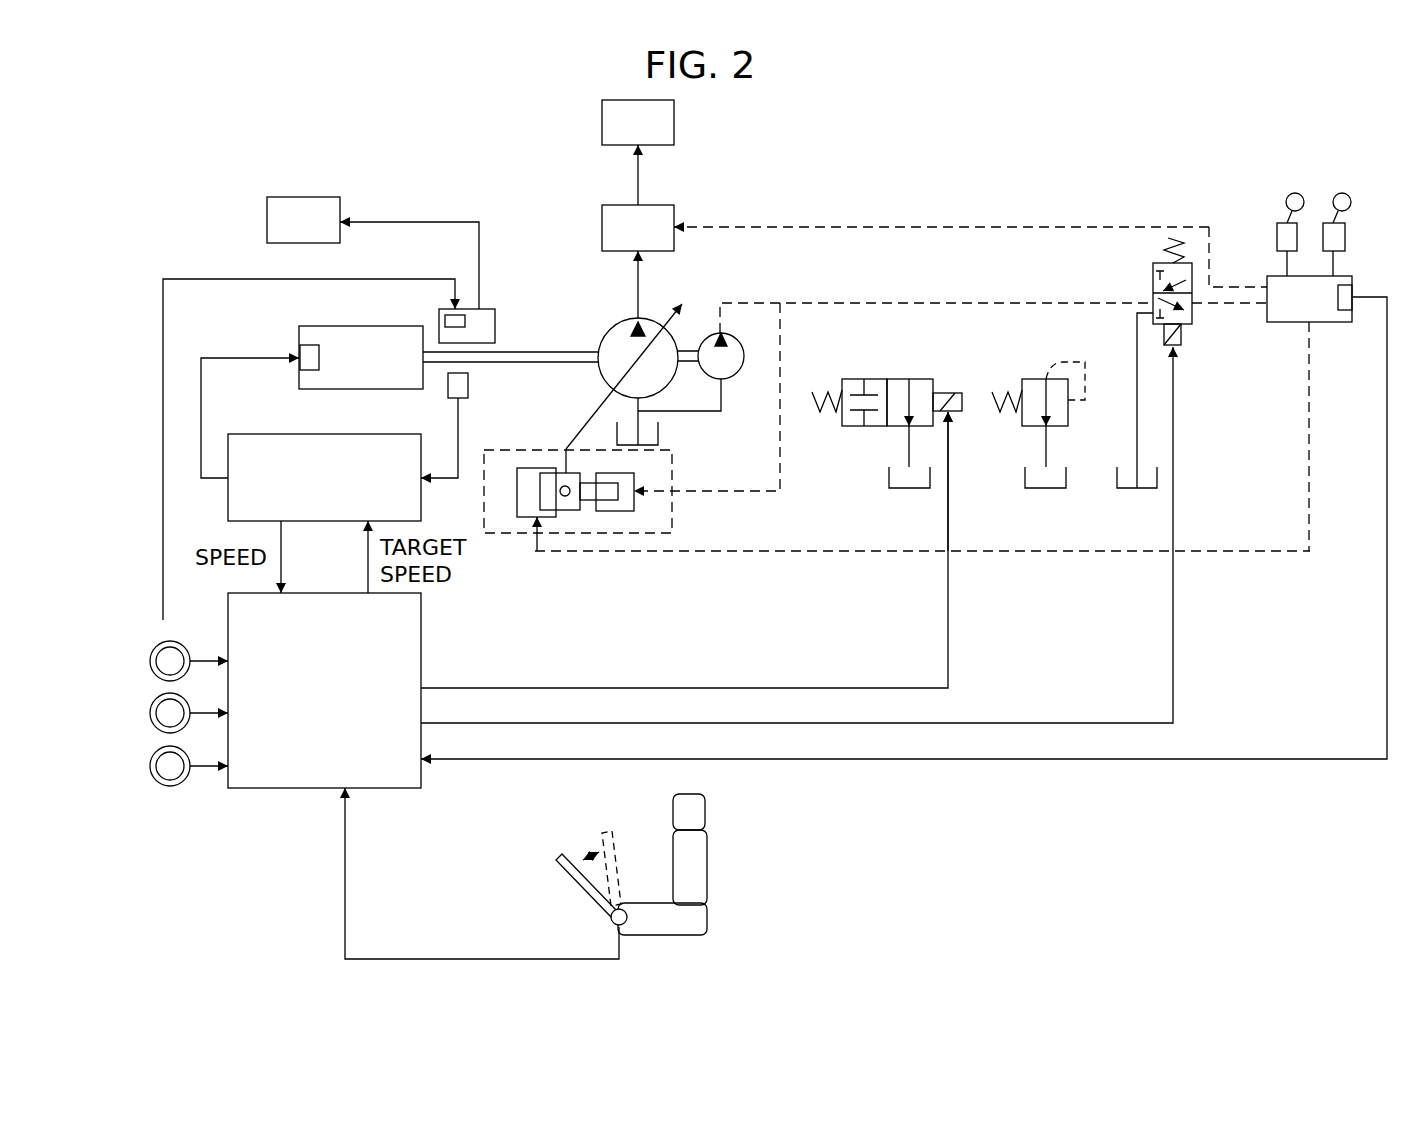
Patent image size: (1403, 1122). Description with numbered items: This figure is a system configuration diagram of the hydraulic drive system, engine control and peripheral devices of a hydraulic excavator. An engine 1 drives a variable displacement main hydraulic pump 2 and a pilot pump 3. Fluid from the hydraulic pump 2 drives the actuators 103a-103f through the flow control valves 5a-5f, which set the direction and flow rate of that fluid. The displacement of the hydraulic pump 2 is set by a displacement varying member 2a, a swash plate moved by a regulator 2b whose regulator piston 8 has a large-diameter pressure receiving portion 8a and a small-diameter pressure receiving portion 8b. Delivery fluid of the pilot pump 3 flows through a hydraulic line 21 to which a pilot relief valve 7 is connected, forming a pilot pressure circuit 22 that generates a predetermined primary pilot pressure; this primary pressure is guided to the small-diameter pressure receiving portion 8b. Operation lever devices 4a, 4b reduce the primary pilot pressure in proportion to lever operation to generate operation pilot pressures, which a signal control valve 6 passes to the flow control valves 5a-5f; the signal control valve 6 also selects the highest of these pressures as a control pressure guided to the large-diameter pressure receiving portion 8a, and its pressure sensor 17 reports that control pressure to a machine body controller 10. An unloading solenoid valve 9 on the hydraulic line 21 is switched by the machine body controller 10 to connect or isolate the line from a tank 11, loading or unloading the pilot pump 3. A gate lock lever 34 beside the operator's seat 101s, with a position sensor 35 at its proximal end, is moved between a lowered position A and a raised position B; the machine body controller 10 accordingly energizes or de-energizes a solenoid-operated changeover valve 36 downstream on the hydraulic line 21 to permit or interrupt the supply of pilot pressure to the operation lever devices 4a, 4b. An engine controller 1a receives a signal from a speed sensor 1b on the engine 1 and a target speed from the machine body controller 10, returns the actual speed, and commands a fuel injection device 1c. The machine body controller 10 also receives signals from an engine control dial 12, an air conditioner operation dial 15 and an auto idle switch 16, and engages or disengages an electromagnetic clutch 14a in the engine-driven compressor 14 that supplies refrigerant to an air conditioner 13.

The engine 1 is at (370, 326).
The engine controller 1a is at (360, 434).
The speed sensor 1b is at (468, 385).
The fuel injection device 1c is at (303, 345).
The main hydraulic pump 2 is at (622, 326).
The displacement varying member 2a is at (590, 416).
The regulator 2b is at (672, 520).
The pilot pump 3 is at (738, 376).
The operation lever device 4a is at (1277, 235).
The operation lever device 4b is at (1345, 232).
The flow control valves 5a-5f is at (688, 186).
The signal control valve 6 is at (1311, 257).
The pilot relief valve 7 is at (1068, 408).
The regulator piston 8 is at (572, 499).
The large-diameter pressure receiving portion 8a is at (528, 517).
The small-diameter pressure receiving portion 8b is at (625, 511).
The unloading solenoid valve 9 is at (845, 379).
The machine body controller 10 is at (421, 643).
The tank 11 is at (658, 433).
The engine control dial 12 is at (156, 650).
The air conditioner 13 is at (297, 197).
The compressor 14 is at (499, 305).
The electromagnetic clutch 14a is at (465, 321).
The air conditioner operation dial 15 is at (156, 702).
The auto idle switch 16 is at (156, 755).
The pressure sensor 17 is at (1348, 288).
The hydraulic line 21 is at (805, 302).
The pilot pressure circuit 22 is at (978, 296).
The gate lock lever 34 is at (575, 885).
The position sensor 35 is at (612, 926).
The solenoid-operated changeover valve 36 is at (1192, 313).
The operator's seat 101s is at (704, 852).
The actuators 103a-103f is at (674, 118).